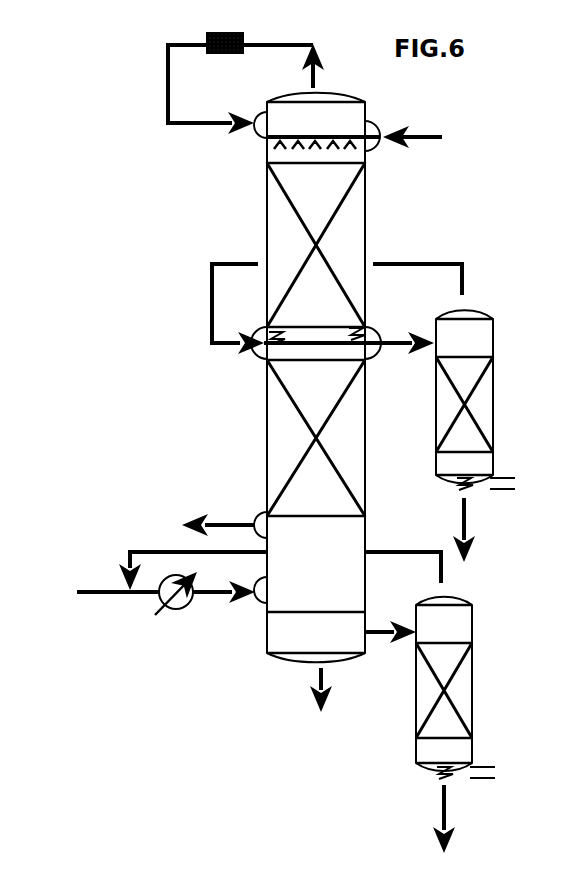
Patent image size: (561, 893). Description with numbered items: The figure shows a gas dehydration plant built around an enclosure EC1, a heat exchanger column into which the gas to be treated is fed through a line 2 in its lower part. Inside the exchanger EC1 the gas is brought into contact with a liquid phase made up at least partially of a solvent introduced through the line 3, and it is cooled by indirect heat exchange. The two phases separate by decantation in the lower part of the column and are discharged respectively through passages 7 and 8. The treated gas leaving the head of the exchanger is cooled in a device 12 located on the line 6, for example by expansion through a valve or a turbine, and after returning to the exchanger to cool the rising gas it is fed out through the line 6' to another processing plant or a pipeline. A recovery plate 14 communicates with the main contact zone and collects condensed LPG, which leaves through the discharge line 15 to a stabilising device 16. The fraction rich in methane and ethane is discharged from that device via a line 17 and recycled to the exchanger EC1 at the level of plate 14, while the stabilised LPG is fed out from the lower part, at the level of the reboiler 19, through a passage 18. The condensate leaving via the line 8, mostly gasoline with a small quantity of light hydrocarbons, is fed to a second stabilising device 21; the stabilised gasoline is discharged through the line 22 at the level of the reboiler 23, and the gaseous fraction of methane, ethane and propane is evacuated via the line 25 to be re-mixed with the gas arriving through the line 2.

The cooling device 12 is at (240, 83).
The line 6 is at (317, 66).
The line 3 is at (354, 146).
The line 17 is at (349, 300).
The recovery plate 14 is at (256, 355).
The discharge line 15 is at (349, 333).
The stabilising device 16 is at (476, 396).
The reboiler 19 is at (499, 484).
The passage 18 is at (475, 530).
The line 25 is at (280, 571).
The second stabilising device 21 is at (457, 684).
The line 8 is at (390, 624).
The reboiler 23 is at (476, 780).
The line 22 is at (455, 819).
The passage 7 is at (327, 690).
The line 2 is at (166, 598).
The line 6' is at (218, 518).
The enclosure EC1 is at (326, 378).